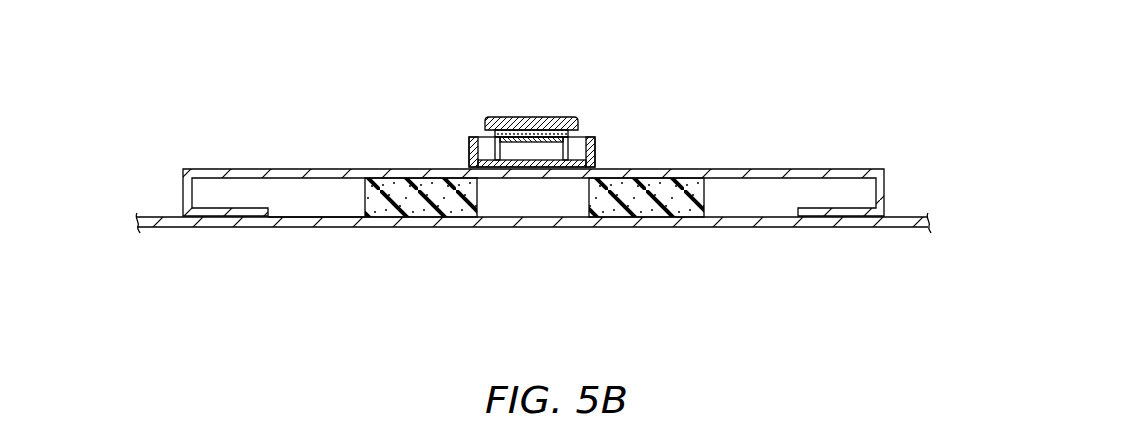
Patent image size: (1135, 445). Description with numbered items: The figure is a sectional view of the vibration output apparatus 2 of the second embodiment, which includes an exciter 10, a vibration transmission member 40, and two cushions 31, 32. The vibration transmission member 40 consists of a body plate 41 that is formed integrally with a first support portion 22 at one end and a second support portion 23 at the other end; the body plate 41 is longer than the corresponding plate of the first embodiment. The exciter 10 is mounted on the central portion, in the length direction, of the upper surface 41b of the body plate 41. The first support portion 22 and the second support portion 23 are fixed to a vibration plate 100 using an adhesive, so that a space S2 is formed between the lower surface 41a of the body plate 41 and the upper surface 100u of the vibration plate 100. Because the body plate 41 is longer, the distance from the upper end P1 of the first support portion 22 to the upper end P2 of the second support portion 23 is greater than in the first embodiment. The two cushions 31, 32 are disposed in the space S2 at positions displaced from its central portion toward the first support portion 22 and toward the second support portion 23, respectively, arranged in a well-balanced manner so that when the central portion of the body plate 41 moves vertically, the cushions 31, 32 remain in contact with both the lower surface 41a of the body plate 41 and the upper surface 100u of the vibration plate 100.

The vibration output apparatus 2 is at (322, 74).
The exciter 10 is at (504, 104).
The first support portion 22 is at (188, 193).
The second support portion 23 is at (880, 187).
The cushion 31 is at (413, 208).
The cushion 32 is at (648, 208).
The vibration transmission member 40 is at (841, 128).
The body plate 41 is at (766, 176).
The lower surface of the body plate 41a is at (316, 188).
The upper surface of the body plate 41b is at (413, 166).
The vibration plate 100 is at (750, 229).
The upper surface of the vibration plate 100u is at (328, 215).
The upper end of the first support portion P1 is at (183, 170).
The upper end of the second support portion P2 is at (885, 168).
The space S2 is at (553, 211).